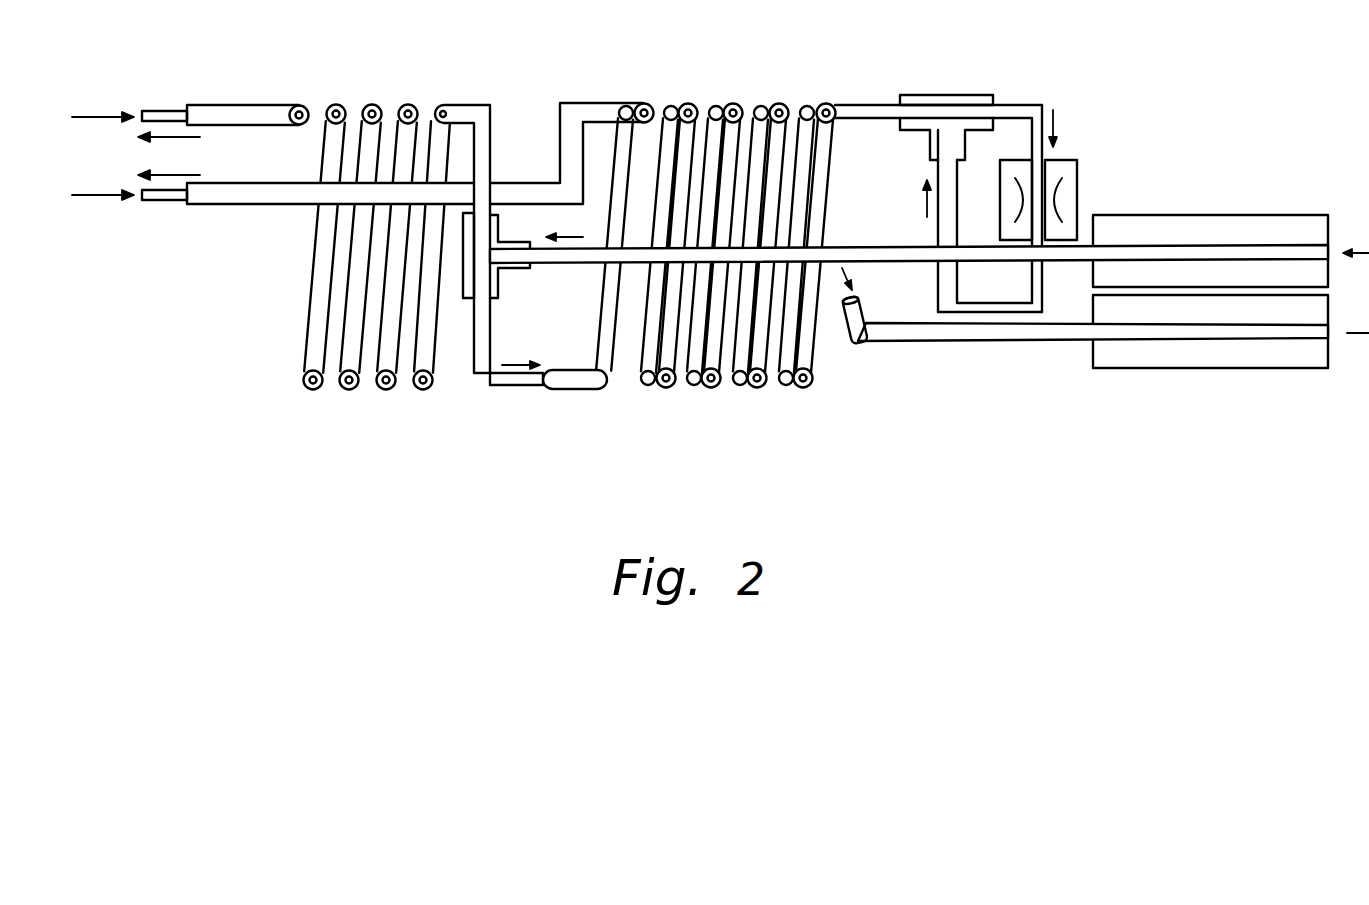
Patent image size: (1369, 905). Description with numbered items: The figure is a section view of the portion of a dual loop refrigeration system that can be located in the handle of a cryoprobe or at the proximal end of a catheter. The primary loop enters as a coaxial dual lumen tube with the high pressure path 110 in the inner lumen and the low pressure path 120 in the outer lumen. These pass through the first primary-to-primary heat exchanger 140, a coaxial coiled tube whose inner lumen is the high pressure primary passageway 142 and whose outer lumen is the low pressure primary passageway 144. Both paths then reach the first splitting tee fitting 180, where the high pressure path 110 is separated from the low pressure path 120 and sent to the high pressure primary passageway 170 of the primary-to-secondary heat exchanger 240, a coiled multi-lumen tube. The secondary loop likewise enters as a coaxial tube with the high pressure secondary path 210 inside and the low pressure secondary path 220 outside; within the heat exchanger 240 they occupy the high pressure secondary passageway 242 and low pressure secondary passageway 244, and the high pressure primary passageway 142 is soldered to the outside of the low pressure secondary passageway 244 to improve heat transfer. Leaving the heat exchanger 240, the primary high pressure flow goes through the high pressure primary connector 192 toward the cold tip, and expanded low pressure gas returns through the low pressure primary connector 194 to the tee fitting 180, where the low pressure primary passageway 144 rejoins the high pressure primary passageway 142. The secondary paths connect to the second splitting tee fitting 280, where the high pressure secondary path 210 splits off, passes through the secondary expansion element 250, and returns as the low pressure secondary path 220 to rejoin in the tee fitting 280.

The high pressure path 110 is at (160, 110).
The low pressure path 120 is at (252, 105).
The first primary-to-primary heat exchanger 140 is at (370, 162).
The high pressure primary passageway 142 is at (372, 105).
The low pressure primary passageway 144 is at (408, 105).
The high pressure primary passageway 170 is at (669, 105).
The first splitting tee fitting 180 is at (498, 297).
The high pressure primary connector 192 is at (1197, 370).
The low pressure primary connector 194 is at (1197, 214).
The high pressure secondary path 210 is at (160, 203).
The low pressure secondary path 220 is at (257, 203).
The primary-to-secondary heat exchanger 240 is at (810, 358).
The high pressure secondary passageway 242 is at (641, 104).
The low pressure secondary passageway 244 is at (758, 387).
The secondary expansion element 250 is at (1080, 172).
The second splitting tee fitting 280 is at (975, 93).